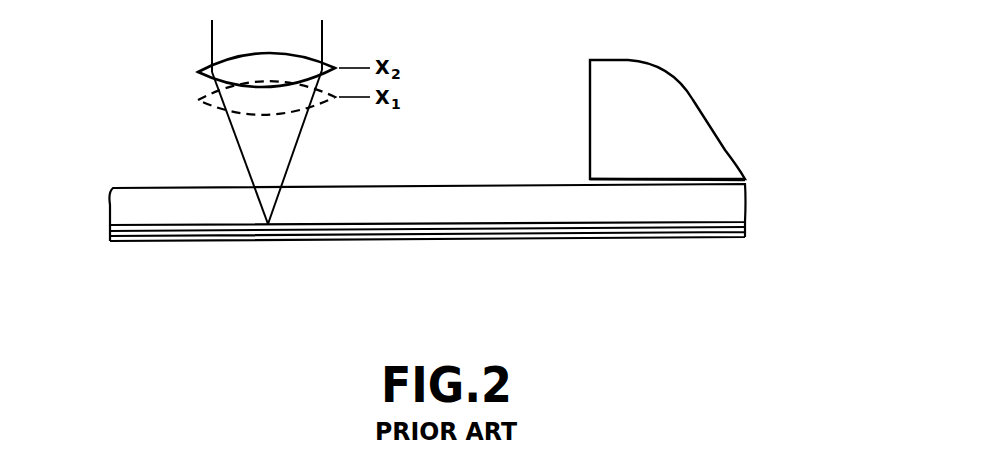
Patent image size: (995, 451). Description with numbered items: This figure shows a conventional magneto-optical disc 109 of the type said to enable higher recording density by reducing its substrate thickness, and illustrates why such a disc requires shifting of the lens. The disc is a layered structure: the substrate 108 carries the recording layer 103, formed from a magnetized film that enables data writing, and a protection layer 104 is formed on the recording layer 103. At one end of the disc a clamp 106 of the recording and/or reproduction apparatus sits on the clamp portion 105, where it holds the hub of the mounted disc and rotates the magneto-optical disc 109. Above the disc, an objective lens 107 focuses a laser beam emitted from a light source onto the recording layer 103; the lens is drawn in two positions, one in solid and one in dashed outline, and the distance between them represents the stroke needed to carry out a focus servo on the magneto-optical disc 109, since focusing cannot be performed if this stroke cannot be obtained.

The recording layer 103 is at (748, 224).
The protection layer 104 is at (745, 237).
The clamp portion 105 is at (698, 203).
The clamp 106 is at (612, 140).
The objective lens 107 is at (198, 72).
The substrate 108 is at (745, 205).
The magneto-optical disc 109 is at (511, 210).